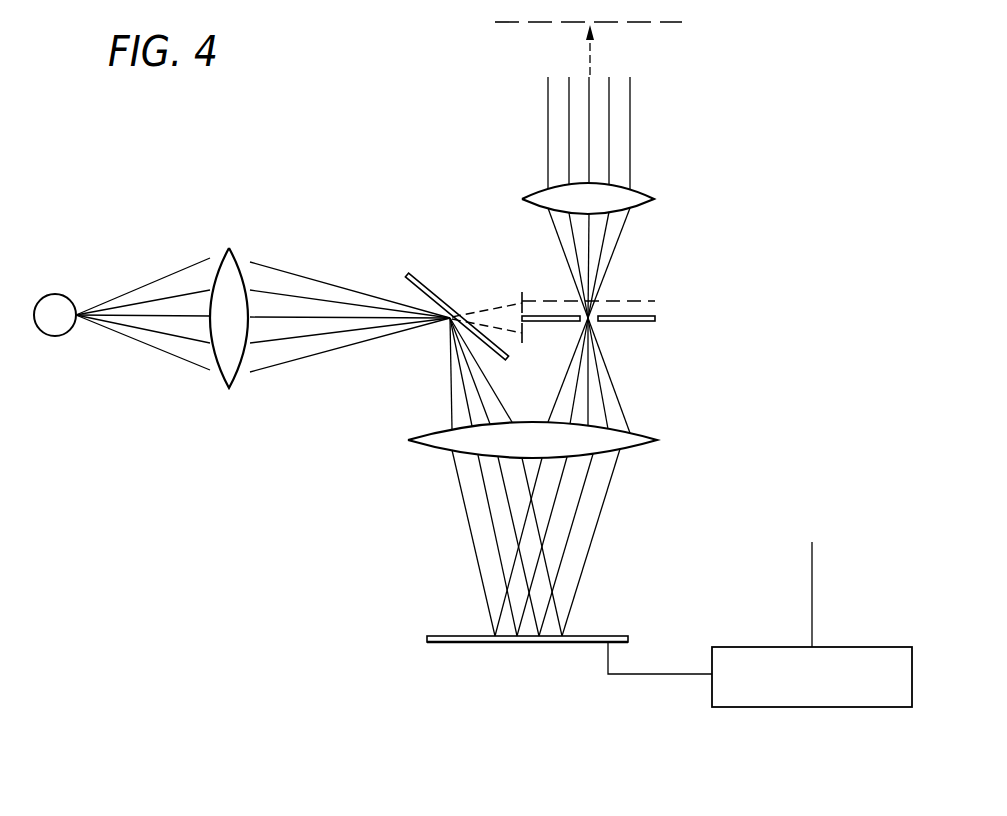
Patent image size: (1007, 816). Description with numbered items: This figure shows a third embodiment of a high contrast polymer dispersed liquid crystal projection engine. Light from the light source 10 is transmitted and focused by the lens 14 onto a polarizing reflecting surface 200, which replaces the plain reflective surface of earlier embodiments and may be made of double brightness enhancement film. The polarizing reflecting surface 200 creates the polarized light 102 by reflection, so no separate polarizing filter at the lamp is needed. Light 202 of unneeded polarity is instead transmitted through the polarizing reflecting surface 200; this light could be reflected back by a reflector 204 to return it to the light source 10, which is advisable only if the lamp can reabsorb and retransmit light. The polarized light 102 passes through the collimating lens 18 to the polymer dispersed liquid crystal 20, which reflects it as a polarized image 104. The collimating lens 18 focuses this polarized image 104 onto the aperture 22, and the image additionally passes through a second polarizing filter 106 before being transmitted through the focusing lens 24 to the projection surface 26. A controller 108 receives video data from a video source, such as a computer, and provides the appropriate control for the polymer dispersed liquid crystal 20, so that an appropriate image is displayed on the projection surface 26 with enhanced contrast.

The light source 10 is at (55, 338).
The lens 14 is at (228, 250).
The polarizing reflecting surface 200 is at (423, 277).
The light of unneeded polarity 202 is at (490, 304).
The reflector 204 is at (523, 329).
The polarized light 102 is at (450, 382).
The aperture 22 is at (650, 323).
The second polarizing filter 106 is at (654, 301).
The focusing lens 24 is at (654, 198).
The projection surface 26 is at (664, 24).
The collimating lens 18 is at (658, 438).
The polarized image 104 is at (605, 515).
The polymer dispersed liquid crystal 20 is at (595, 636).
The controller 108 is at (850, 708).